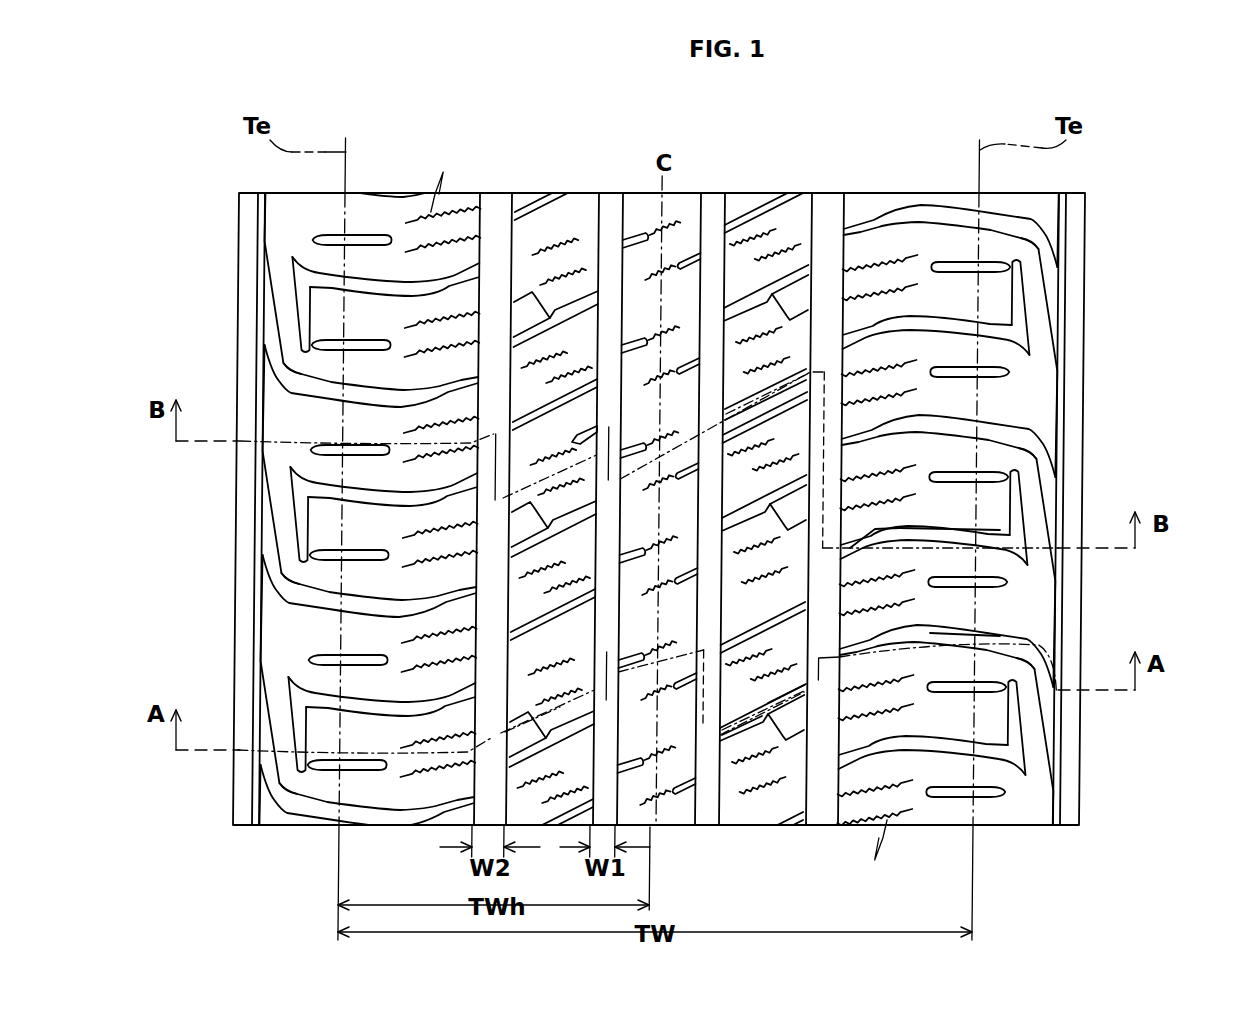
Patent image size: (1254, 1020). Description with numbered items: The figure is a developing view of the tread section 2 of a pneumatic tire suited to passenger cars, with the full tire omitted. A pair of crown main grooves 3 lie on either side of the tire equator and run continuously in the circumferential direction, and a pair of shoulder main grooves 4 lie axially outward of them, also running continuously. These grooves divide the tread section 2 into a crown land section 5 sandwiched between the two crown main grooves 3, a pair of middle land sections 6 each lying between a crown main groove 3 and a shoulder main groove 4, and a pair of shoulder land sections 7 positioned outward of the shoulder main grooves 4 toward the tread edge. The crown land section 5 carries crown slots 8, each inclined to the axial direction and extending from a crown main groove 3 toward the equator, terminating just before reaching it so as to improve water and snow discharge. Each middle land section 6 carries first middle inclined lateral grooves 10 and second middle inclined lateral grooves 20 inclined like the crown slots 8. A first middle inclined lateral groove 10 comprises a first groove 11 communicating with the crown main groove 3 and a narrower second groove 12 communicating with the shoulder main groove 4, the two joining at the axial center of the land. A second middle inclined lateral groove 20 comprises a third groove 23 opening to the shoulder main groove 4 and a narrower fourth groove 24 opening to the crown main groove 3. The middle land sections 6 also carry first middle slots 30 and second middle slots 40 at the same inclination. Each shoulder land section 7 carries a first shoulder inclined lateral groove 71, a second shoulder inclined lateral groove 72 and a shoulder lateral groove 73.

The tread section 2 is at (1138, 180).
The crown main groove 3 is at (614, 228).
The shoulder main groove 4 is at (496, 228).
The crown land section 5 is at (690, 225).
The middle land section 6 is at (661, 516).
The shoulder land section 7 is at (388, 222).
The crown slot 8 is at (690, 462).
The first middle inclined lateral groove 10 is at (757, 723).
The first groove 11 is at (727, 732).
The second groove 12 is at (790, 700).
The second middle inclined lateral groove 20 is at (770, 392).
The third groove 23 is at (760, 400).
The fourth groove 24 is at (757, 413).
The first middle slot 30 is at (527, 720).
The second middle slot 40 is at (582, 440).
The first shoulder inclined lateral groove 71 is at (965, 650).
The second shoulder inclined lateral groove 72 is at (868, 545).
The shoulder lateral groove 73 is at (935, 547).